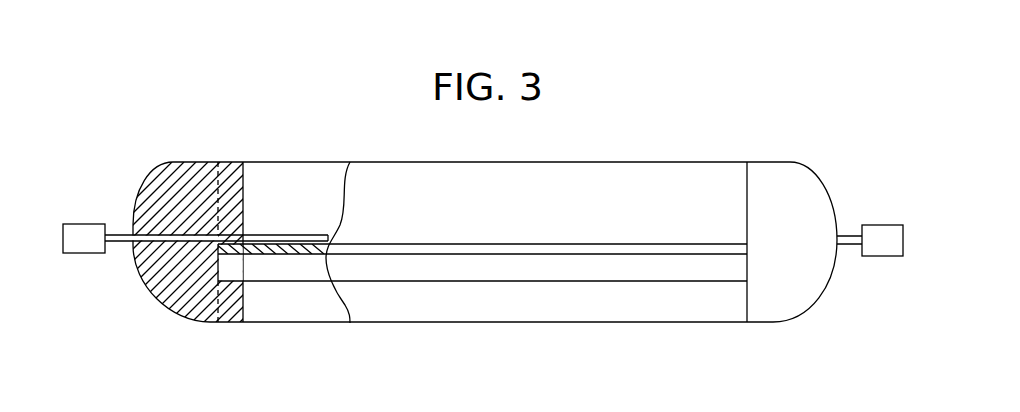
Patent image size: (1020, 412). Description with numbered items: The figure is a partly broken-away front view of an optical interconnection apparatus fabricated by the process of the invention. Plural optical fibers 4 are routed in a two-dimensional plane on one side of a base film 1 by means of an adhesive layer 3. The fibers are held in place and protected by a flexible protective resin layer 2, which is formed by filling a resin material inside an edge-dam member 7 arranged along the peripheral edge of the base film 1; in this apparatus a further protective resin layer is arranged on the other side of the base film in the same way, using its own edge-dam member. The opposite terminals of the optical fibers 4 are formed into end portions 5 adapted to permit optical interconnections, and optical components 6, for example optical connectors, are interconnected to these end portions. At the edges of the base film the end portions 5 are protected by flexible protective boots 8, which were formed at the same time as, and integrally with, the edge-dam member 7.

The base film 1 is at (262, 275).
The protective resin layer 2 is at (282, 173).
The adhesive layer 3 is at (313, 256).
The optical fibers 4 is at (313, 236).
The end portions 5 is at (118, 248).
The optical components 6 is at (87, 232).
The edge-dam member 7 is at (232, 164).
The protective boots 8 is at (198, 164).